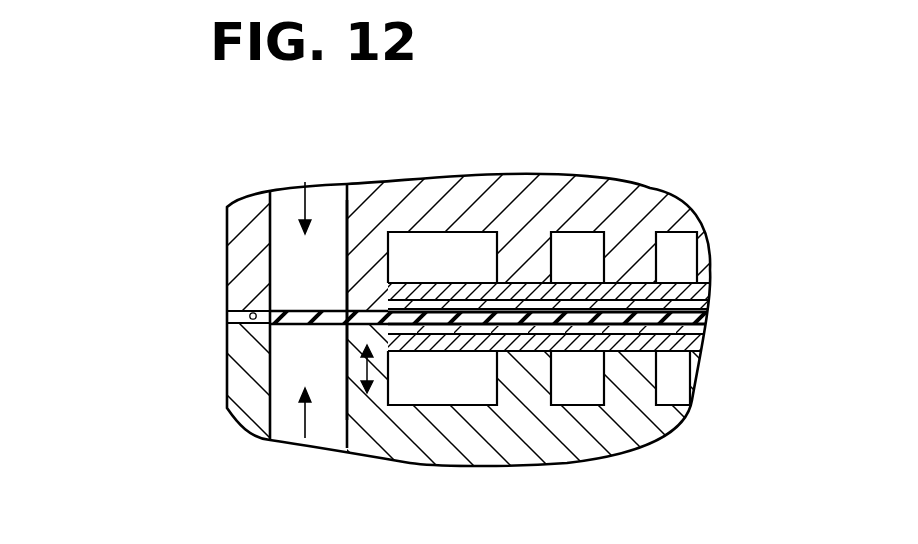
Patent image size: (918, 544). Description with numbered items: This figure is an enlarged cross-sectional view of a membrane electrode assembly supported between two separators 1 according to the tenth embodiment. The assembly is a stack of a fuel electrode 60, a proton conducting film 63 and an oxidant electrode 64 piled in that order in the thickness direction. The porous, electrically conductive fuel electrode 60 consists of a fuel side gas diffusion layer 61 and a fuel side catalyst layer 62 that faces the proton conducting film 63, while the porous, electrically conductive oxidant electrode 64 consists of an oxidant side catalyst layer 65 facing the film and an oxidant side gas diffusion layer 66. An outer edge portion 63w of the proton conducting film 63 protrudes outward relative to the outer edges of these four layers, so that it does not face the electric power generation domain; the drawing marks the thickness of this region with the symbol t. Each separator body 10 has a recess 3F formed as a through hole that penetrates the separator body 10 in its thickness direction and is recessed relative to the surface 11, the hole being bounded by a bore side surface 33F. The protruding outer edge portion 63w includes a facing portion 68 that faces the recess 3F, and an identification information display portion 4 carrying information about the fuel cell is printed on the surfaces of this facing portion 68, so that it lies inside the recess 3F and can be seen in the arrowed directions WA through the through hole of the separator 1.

The separator 1 is at (236, 219).
The separator body 10 is at (237, 243).
The surface 11 is at (259, 309).
The identification information display portion 4 is at (300, 303).
The facing portion 68 is at (292, 326).
The outer edge portion 63w is at (289, 324).
The fuel electrode 60 is at (783, 260).
The fuel side gas diffusion layer 61 is at (707, 286).
The fuel side catalyst layer 62 is at (705, 302).
The proton conducting film 63 is at (702, 318).
The oxidant electrode 64 is at (783, 360).
The oxidant side catalyst layer 65 is at (700, 334).
The oxidant side gas diffusion layer 66 is at (700, 348).
The thickness t is at (370, 370).
The arrowed directions WA is at (283, 217).
The recess 3F is at (290, 187).
The bore side surface 33F is at (345, 218).